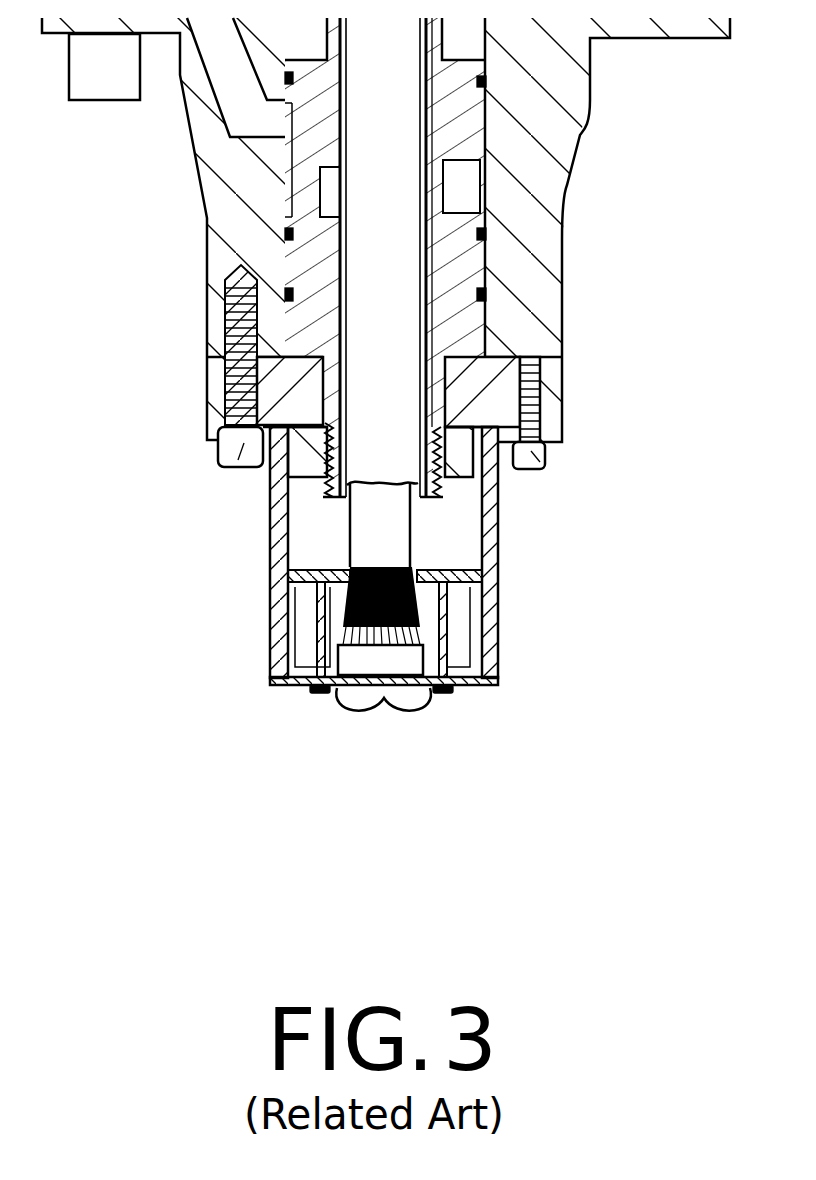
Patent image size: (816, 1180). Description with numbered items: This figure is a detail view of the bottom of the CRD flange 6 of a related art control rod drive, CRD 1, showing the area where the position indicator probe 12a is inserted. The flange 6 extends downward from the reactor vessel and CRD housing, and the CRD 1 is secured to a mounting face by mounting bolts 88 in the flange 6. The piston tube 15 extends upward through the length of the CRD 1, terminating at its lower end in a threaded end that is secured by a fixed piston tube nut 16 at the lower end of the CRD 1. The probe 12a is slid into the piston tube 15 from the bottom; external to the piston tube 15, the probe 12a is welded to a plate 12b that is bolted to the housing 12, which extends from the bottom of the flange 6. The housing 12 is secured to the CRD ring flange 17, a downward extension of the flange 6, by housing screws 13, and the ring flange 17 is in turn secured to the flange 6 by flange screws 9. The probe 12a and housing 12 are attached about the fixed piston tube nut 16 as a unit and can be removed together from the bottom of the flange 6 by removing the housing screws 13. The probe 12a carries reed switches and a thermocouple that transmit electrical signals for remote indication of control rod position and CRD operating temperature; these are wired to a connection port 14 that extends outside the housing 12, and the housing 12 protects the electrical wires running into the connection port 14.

The control rod drive (CRD) 1 is at (683, 139).
The CRD flange 6 is at (555, 247).
The flange screws 9 is at (241, 443).
The housing 12 is at (507, 593).
The position indicator probe 12a is at (417, 548).
The plate 12b is at (285, 611).
The housing screws 13 is at (545, 470).
The connection port 14 is at (415, 657).
The piston tube 15 is at (342, 255).
The fixed piston tube nut 16 is at (500, 503).
The CRD ring flange 17 is at (566, 365).
The mounting bolts 88 is at (100, 70).